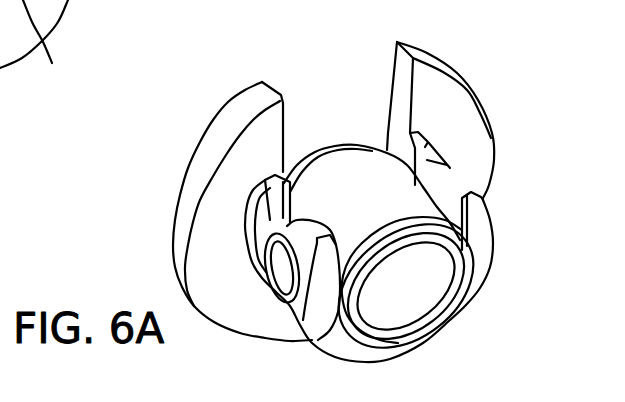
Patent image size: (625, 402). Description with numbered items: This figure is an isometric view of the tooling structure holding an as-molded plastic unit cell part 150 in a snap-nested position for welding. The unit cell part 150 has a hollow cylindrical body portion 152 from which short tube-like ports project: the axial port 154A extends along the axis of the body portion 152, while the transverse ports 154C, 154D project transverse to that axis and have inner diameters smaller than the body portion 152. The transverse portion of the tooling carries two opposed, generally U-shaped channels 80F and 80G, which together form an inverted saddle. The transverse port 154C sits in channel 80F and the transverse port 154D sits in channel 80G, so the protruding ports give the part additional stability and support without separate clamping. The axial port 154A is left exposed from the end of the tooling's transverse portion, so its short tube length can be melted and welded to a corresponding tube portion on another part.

The unit cell part 150 is at (350, 119).
The hollow cylindrical body portion 152 is at (350, 172).
The axial port 154A is at (438, 311).
The transverse port 154C is at (295, 234).
The transverse port 154D is at (462, 190).
The transverse channel 80F is at (265, 178).
The transverse channel 80G is at (489, 32).